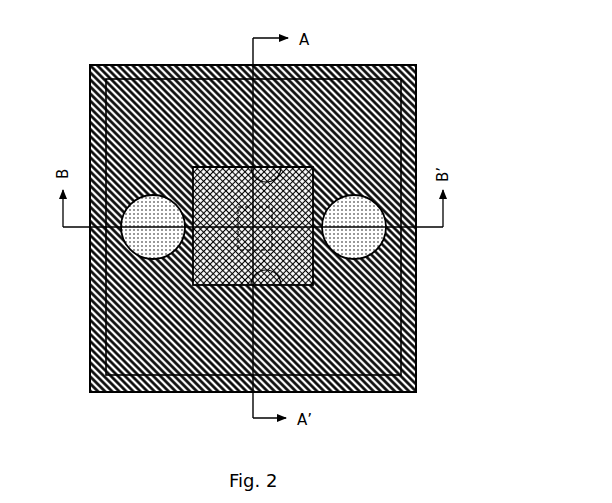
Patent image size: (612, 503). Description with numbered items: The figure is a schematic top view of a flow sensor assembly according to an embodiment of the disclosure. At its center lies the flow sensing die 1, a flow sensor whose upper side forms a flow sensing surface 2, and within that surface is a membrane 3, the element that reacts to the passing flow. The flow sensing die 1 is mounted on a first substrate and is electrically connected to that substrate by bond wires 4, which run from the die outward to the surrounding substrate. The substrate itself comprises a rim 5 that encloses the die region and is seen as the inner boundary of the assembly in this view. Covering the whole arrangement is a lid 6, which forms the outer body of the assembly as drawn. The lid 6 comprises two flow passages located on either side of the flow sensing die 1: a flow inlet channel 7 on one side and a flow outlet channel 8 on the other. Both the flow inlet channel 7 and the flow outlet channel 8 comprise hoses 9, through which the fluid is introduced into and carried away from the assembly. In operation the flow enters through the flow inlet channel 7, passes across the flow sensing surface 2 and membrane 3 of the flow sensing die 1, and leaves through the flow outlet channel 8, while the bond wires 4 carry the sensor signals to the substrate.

The flow sensing die 1 is at (208, 162).
The flow sensing surface 2 is at (226, 180).
The membrane 3 is at (239, 246).
The bond wires 4 is at (291, 151).
The rim 5 is at (409, 147).
The lid 6 is at (417, 393).
The flow inlet channel 7 is at (151, 239).
The flow outlet channel 8 is at (363, 240).
The hoses 9 is at (90, 163).